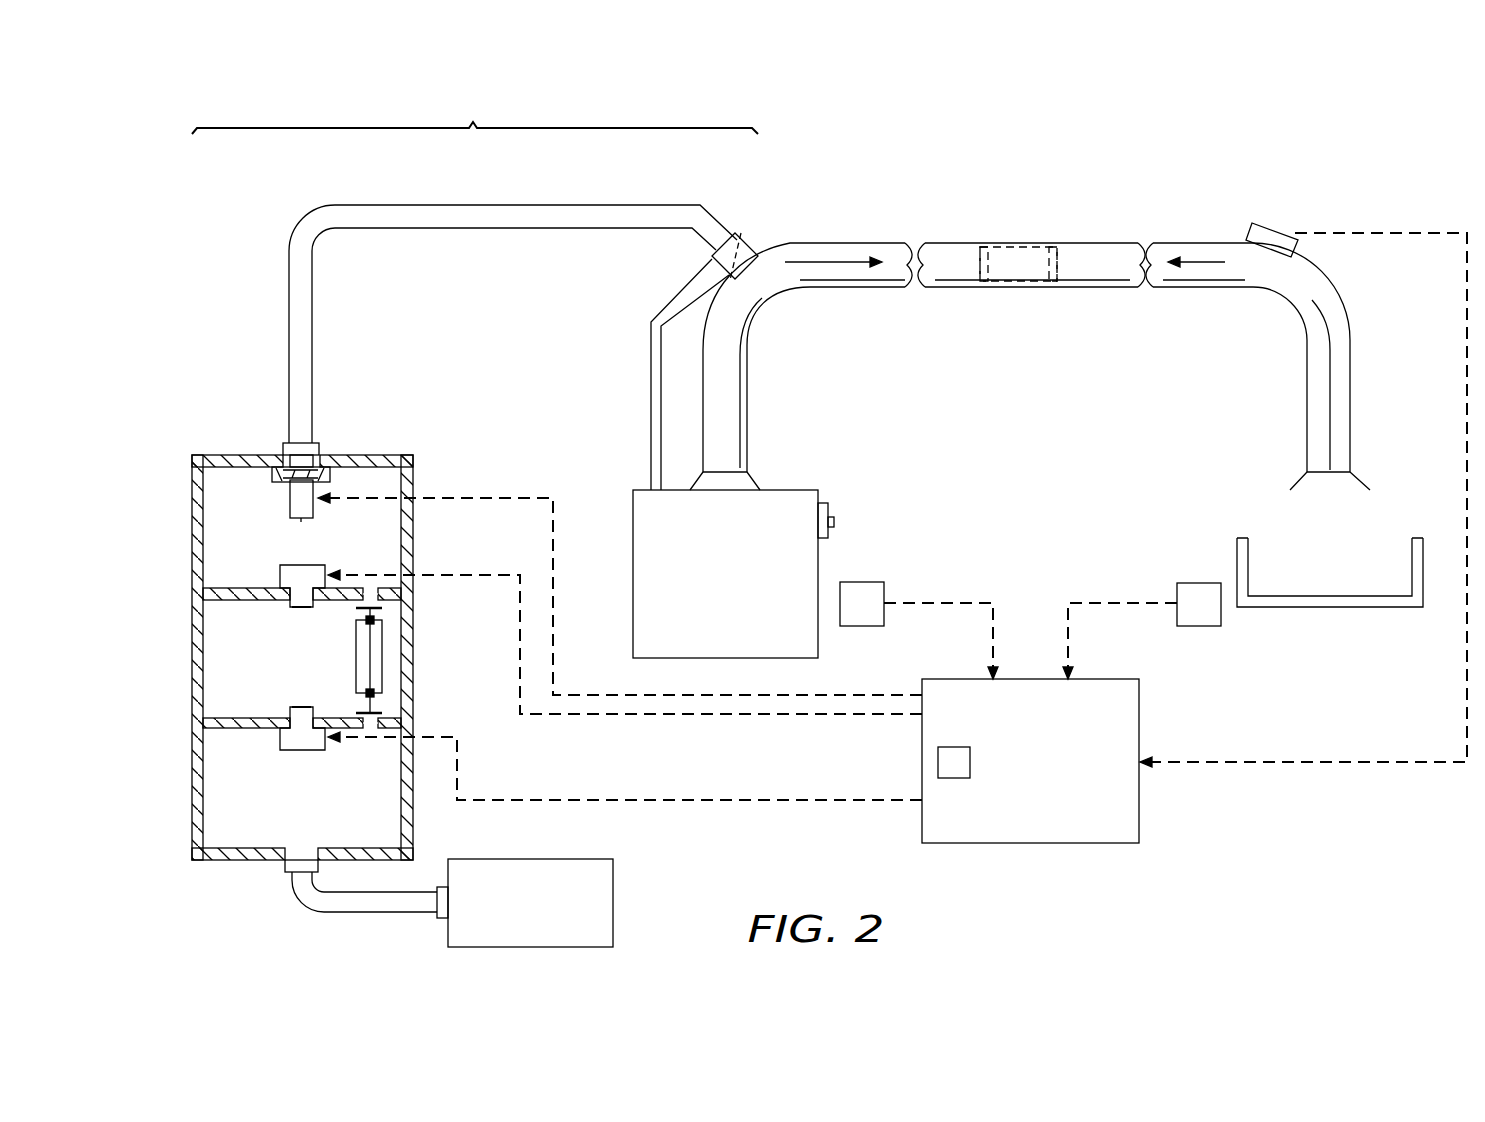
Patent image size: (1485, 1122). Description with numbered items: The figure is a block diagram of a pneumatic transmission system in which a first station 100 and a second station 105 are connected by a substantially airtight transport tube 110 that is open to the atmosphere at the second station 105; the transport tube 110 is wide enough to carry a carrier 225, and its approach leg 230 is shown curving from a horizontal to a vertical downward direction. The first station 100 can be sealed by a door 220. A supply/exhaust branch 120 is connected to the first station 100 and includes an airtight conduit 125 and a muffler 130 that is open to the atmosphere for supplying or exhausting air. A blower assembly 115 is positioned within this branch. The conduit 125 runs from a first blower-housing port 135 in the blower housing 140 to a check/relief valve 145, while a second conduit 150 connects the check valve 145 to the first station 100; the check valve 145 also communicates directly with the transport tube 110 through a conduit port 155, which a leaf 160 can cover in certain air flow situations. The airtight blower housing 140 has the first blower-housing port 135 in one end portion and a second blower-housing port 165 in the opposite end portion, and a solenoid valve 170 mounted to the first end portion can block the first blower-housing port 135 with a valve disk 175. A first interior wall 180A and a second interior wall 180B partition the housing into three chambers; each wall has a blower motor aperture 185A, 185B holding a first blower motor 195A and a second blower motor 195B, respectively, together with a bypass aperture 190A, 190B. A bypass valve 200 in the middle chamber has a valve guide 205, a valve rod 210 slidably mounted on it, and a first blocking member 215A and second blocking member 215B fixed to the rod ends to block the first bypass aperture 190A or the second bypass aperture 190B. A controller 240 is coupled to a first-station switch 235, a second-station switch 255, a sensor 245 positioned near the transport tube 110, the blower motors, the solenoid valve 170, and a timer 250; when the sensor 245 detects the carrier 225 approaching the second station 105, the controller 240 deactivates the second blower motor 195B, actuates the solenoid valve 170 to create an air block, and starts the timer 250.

The first station 100 is at (633, 590).
The second station 105 is at (1370, 607).
The transport tube 110 is at (1097, 243).
The blower assembly 115 is at (222, 395).
The supply/exhaust branch 120 is at (475, 112).
The conduit 125 is at (514, 204).
The muffler 130 is at (613, 900).
The first blower-housing port 135 is at (283, 447).
The blower housing 140 is at (192, 800).
The check/relief valve 145 is at (712, 258).
The second conduit 150 is at (650, 360).
The conduit port 155 is at (764, 262).
The leaf 160 is at (752, 236).
The second blower-housing port 165 is at (285, 866).
The solenoid valve 170 is at (291, 500).
The valve disk 175 is at (272, 476).
The first interior wall 180A is at (240, 600).
The second interior wall 180B is at (247, 728).
The first blower motor aperture 185A is at (305, 608).
The second blower motor aperture 185B is at (297, 707).
The first bypass aperture 190A is at (368, 588).
The second bypass aperture 190B is at (366, 728).
The first blower motor 195A is at (280, 575).
The second blower motor 195B is at (298, 750).
The bypass valve 200 is at (348, 661).
The valve guide 205 is at (383, 668).
The valve rod 210 is at (383, 638).
The first blocking member 215A is at (383, 609).
The second blocking member 215B is at (383, 713).
The door 220 is at (834, 514).
The carrier 225 is at (1020, 243).
The approach leg 230 is at (1353, 390).
The first-station switch 235 is at (868, 582).
The controller 240 is at (1103, 679).
The sensor 245 is at (1265, 226).
The timer 250 is at (970, 760).
The second-station switch 255 is at (1192, 583).